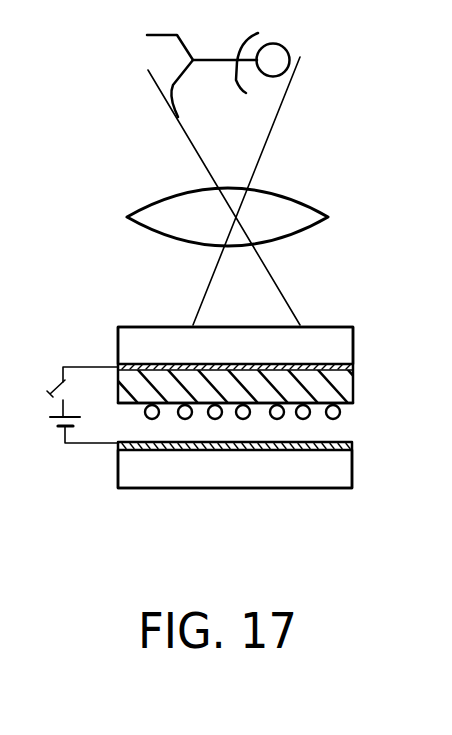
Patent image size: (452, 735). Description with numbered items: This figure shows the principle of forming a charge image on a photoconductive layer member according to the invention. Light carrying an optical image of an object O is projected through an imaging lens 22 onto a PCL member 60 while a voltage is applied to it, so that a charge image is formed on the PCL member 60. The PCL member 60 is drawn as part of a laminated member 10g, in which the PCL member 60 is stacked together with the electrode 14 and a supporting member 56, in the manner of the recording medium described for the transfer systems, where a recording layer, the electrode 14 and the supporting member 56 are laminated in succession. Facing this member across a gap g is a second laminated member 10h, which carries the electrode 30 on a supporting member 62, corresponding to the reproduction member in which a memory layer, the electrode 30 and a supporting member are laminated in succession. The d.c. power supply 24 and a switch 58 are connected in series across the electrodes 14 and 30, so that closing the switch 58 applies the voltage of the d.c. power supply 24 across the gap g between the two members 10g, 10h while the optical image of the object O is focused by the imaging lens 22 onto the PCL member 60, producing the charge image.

The object O is at (328, 33).
The imaging lens 22 is at (300, 198).
The image recording member 10g is at (329, 316).
The supporting member 56 is at (142, 332).
The electrode 14 is at (348, 368).
The PCL member 60 is at (342, 390).
The switch 58 is at (58, 382).
The d.c. power supply 24 is at (58, 432).
The gap g is at (133, 425).
The opposing member 10h is at (238, 496).
The electrode 30 is at (353, 445).
The substrate 62 is at (128, 478).